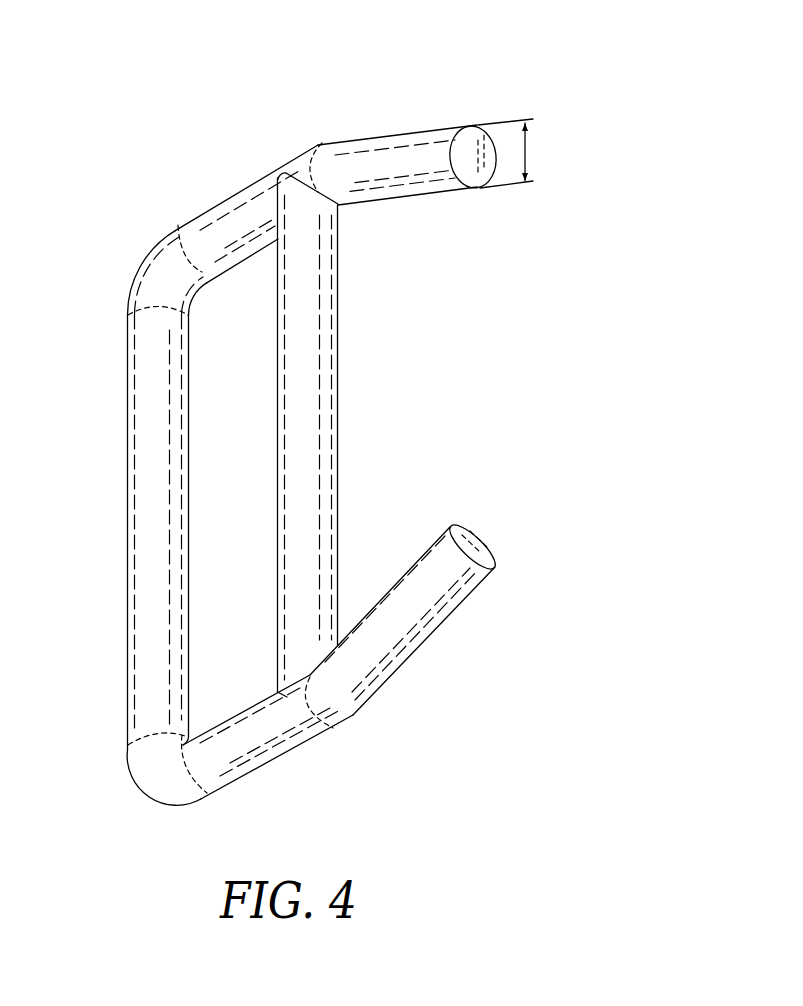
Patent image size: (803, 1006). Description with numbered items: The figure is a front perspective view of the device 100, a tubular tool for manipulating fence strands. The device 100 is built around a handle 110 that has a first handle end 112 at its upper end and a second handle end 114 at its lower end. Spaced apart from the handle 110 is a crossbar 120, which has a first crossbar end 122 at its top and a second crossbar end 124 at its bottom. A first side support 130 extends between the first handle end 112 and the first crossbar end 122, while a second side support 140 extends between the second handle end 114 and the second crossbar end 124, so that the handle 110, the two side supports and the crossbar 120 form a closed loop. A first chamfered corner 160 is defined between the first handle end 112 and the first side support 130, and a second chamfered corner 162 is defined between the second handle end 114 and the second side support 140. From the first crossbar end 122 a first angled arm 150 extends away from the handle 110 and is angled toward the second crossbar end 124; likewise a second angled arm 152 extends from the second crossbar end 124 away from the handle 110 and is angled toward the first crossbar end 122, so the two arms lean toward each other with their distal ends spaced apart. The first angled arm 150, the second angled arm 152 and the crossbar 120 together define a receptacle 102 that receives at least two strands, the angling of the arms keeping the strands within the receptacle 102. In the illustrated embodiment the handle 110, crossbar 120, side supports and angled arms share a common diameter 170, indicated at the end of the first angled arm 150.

The device 100 is at (552, 80).
The receptacle 102 is at (457, 322).
The handle 110 is at (150, 450).
The first handle end 112 is at (143, 302).
The second handle end 114 is at (143, 743).
The crossbar 120 is at (298, 480).
The first crossbar end 122 is at (283, 190).
The second crossbar end 124 is at (292, 684).
The first side support 130 is at (253, 190).
The second side support 140 is at (253, 757).
The first angled arm 150 is at (384, 147).
The second angled arm 152 is at (428, 620).
The first chamfered corner 160 is at (147, 257).
The second chamfered corner 162 is at (163, 804).
The common diameter 170 is at (528, 150).